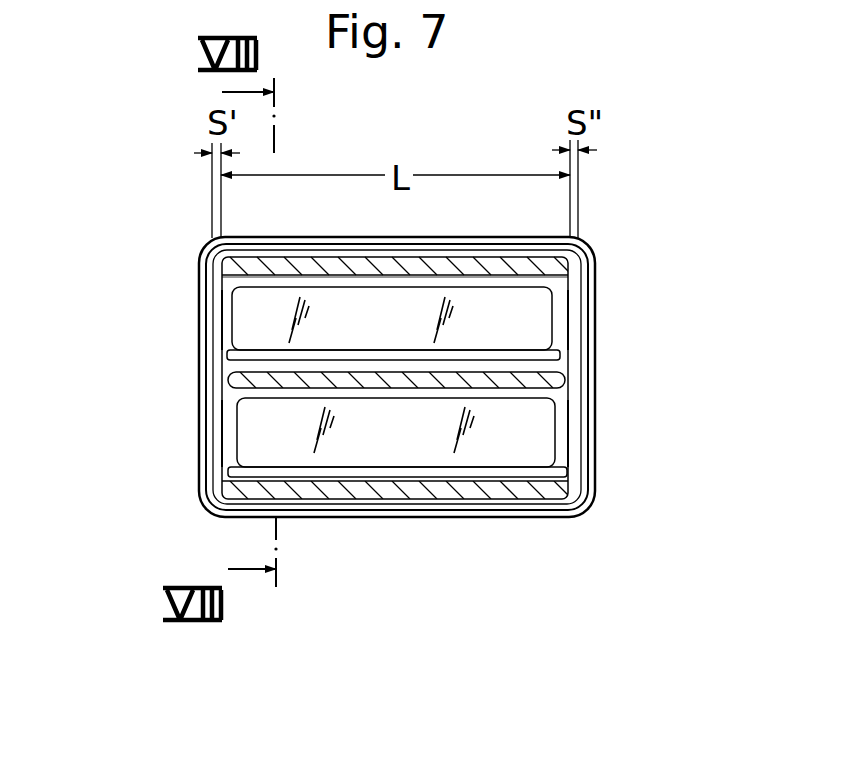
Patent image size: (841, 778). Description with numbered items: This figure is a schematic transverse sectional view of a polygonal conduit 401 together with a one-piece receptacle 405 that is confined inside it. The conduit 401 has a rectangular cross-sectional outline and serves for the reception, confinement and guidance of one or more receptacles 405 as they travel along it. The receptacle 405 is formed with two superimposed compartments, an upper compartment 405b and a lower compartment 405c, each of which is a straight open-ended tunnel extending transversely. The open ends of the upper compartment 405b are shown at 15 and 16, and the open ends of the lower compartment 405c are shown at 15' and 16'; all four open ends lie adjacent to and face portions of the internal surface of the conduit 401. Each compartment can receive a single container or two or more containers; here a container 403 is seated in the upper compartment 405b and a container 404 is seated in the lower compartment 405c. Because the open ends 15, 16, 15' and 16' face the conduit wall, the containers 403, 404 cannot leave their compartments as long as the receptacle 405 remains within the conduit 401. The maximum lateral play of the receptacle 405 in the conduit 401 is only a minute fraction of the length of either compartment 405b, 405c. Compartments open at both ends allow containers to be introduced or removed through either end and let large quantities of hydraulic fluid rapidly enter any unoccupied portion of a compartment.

The conduit 401 is at (595, 376).
The container 403 is at (253, 315).
The container 404 is at (258, 415).
The receptacle 405 is at (430, 265).
The upper compartment 405b is at (260, 285).
The lower compartment 405c is at (418, 392).
The open end of upper compartment 15 is at (618, 311).
The open end of lower compartment 15' is at (627, 438).
The open end of upper compartment 16 is at (156, 320).
The open end of lower compartment 16' is at (163, 433).